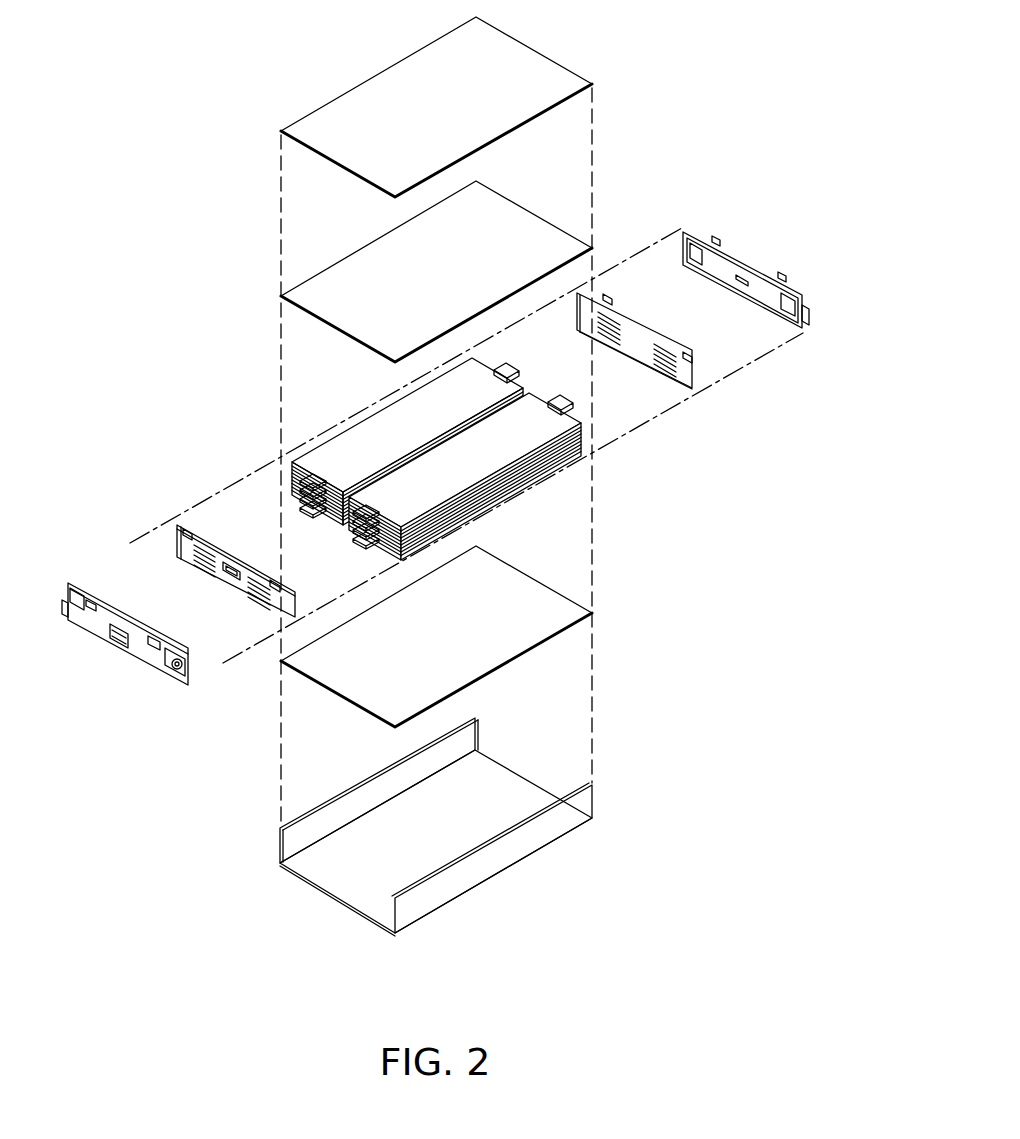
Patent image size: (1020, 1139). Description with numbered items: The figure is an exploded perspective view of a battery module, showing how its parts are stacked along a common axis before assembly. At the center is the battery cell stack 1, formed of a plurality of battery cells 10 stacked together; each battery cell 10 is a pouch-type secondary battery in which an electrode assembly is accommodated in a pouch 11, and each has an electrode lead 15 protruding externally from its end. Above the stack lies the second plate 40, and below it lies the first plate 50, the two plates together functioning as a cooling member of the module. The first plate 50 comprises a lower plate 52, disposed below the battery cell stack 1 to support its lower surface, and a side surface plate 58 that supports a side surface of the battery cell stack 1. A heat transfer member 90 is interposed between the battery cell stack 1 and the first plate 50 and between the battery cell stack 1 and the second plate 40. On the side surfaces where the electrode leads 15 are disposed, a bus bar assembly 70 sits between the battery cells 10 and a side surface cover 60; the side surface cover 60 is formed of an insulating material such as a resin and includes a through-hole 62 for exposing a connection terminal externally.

The battery cell stack 1 is at (447, 459).
The battery cell 10 is at (432, 459).
The pouch 11 is at (385, 418).
The electrode lead 15 is at (318, 478).
The second plate 40 is at (531, 60).
The first plate 50 is at (436, 867).
The lower plate 52 is at (351, 890).
The side surface plate 58 is at (323, 982).
The side surface cover 60 is at (125, 650).
The through-hole 62 is at (170, 658).
The bus bar assembly 70 is at (168, 544).
The heat transfer member 90 is at (531, 226).